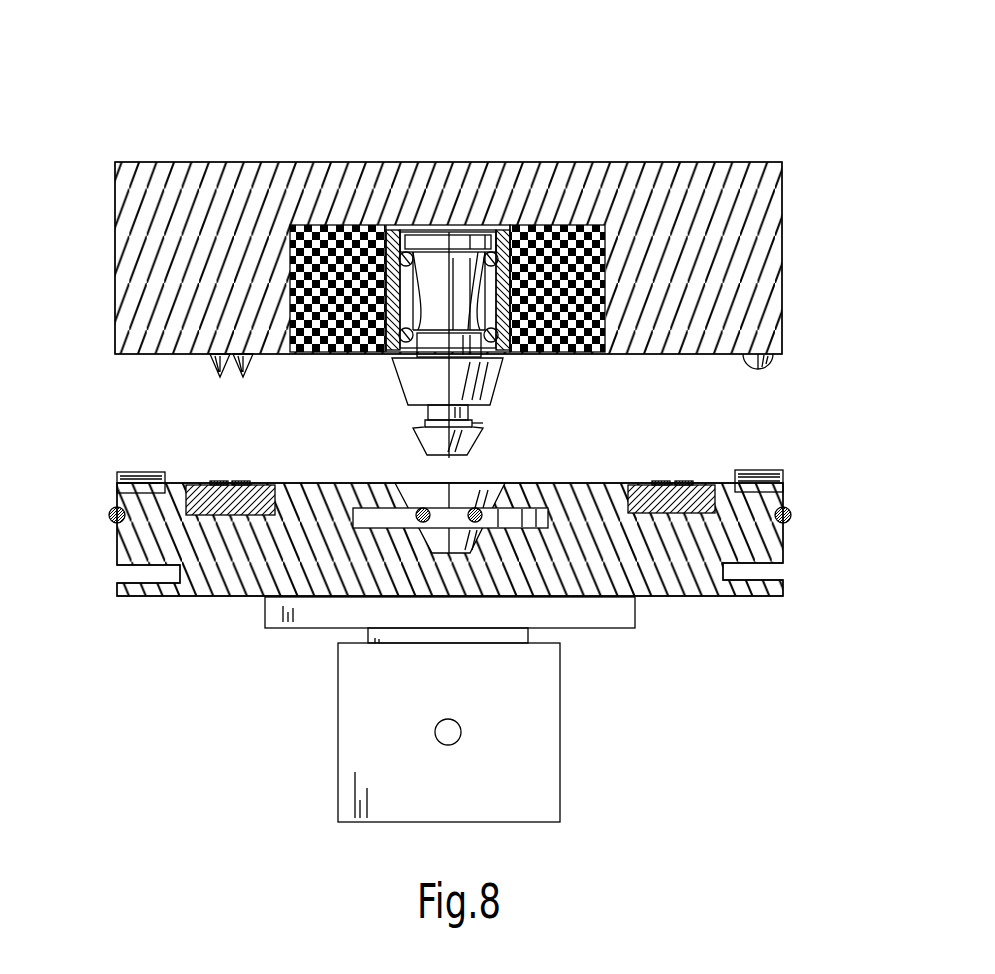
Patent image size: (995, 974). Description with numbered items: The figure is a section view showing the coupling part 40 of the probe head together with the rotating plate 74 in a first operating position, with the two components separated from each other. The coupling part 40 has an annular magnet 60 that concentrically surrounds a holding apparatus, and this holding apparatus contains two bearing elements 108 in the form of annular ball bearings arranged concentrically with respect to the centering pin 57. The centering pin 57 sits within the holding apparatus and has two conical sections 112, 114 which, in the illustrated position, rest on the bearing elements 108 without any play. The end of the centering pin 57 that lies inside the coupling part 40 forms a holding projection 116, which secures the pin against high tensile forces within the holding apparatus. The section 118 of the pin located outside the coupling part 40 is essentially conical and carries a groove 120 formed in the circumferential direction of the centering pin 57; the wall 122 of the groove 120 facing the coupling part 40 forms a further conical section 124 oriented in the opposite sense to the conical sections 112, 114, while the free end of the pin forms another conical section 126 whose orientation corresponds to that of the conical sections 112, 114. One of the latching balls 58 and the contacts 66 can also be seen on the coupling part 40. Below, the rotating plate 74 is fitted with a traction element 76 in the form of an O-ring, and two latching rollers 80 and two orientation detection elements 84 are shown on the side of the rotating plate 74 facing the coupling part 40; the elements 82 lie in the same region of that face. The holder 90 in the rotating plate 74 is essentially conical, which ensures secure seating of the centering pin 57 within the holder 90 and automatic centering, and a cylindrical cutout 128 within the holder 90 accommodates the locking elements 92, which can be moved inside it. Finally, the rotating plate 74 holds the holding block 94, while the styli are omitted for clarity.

The coupling part 40 is at (708, 162).
The centering pin 57 is at (462, 237).
The latching balls 58 is at (758, 369).
The annular magnet 60 is at (330, 238).
The contacts 66 is at (220, 377).
The rotating plate 74 is at (718, 596).
The traction element 76 is at (109, 516).
The latching rollers 80 is at (117, 483).
The contact strips 82 is at (242, 481).
The orientation detection elements 84 is at (270, 485).
The holder 90 is at (497, 495).
The locking elements 92 is at (428, 509).
The holding block 94 is at (535, 762).
The bearing elements 108 is at (412, 328).
The conical section 112 is at (438, 360).
The conical section 114 is at (470, 346).
The holding projection 116 is at (443, 240).
The section 118 is at (390, 410).
The groove 120 is at (497, 417).
The wall 122 is at (483, 424).
The further conical section 124 is at (428, 415).
The further conical section 126 is at (416, 437).
The cylindrical cutout 128 is at (375, 518).